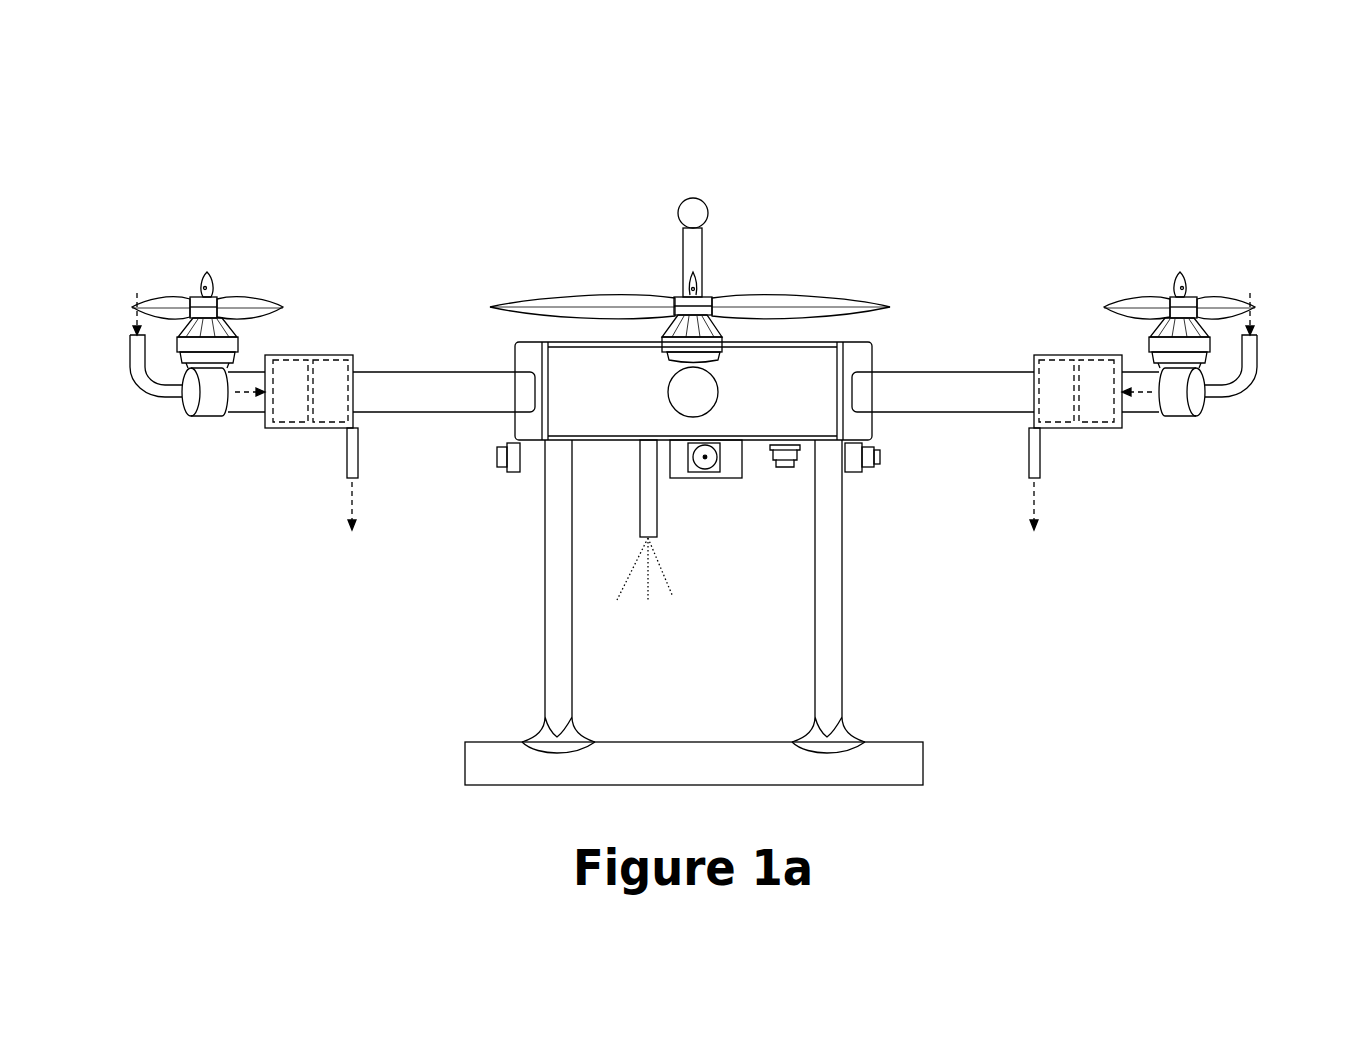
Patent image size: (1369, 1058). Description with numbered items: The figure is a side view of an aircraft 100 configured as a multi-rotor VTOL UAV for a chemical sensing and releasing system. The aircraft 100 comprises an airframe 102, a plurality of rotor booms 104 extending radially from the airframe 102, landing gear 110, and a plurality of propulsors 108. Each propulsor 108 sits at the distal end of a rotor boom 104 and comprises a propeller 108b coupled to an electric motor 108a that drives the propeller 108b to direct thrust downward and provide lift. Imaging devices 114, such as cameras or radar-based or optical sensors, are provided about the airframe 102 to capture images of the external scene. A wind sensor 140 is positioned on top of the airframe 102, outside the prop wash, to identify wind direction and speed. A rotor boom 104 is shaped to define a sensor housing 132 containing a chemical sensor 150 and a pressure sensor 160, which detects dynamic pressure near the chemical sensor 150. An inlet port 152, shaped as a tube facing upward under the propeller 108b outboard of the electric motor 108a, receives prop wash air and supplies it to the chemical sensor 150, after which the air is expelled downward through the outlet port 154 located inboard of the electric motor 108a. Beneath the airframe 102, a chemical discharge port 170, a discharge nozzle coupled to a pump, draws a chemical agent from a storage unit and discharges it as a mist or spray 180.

The aircraft 100 is at (1140, 69).
The airframe 102 is at (592, 440).
The rotor booms 104 is at (438, 368).
The propulsors 108 is at (125, 245).
The electric motor 108a is at (238, 338).
The propeller 108b is at (282, 305).
The landing gear 110 is at (840, 663).
The imaging devices 114 is at (500, 472).
The sensor housing 132 is at (1037, 355).
The wind sensor 140 is at (693, 198).
The chemical sensor 150 is at (292, 428).
The inlet port 152 is at (130, 343).
The outlet port 154 is at (358, 447).
The pressure sensor 160 is at (332, 428).
The chemical discharge port 170 is at (640, 510).
The spray 180 is at (667, 580).